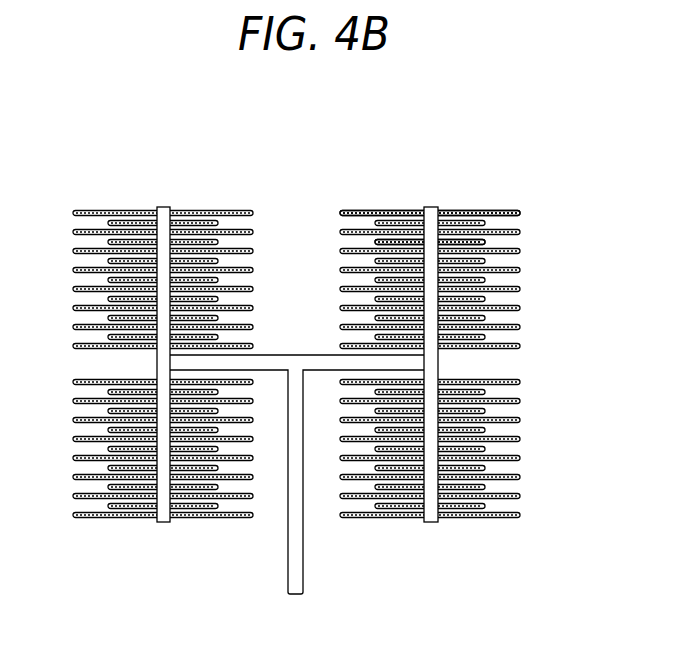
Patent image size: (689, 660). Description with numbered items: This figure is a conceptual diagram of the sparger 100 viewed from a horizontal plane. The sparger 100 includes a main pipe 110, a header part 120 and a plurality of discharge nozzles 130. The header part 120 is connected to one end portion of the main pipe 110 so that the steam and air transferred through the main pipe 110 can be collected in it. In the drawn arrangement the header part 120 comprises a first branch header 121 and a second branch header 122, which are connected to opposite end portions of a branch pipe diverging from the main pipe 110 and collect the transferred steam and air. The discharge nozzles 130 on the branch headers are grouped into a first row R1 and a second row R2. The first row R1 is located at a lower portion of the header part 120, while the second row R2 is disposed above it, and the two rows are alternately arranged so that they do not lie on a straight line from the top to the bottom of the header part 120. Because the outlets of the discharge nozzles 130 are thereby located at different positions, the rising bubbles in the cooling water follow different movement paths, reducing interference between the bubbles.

The sparger 100 is at (43, 181).
The main pipe 110 is at (293, 566).
The header part 120 is at (438, 129).
The first branch header 121 is at (430, 207).
The second branch header 122 is at (162, 207).
The discharge nozzle 130 is at (478, 199).
The first row R1 is at (522, 213).
The second row R2 is at (487, 243).